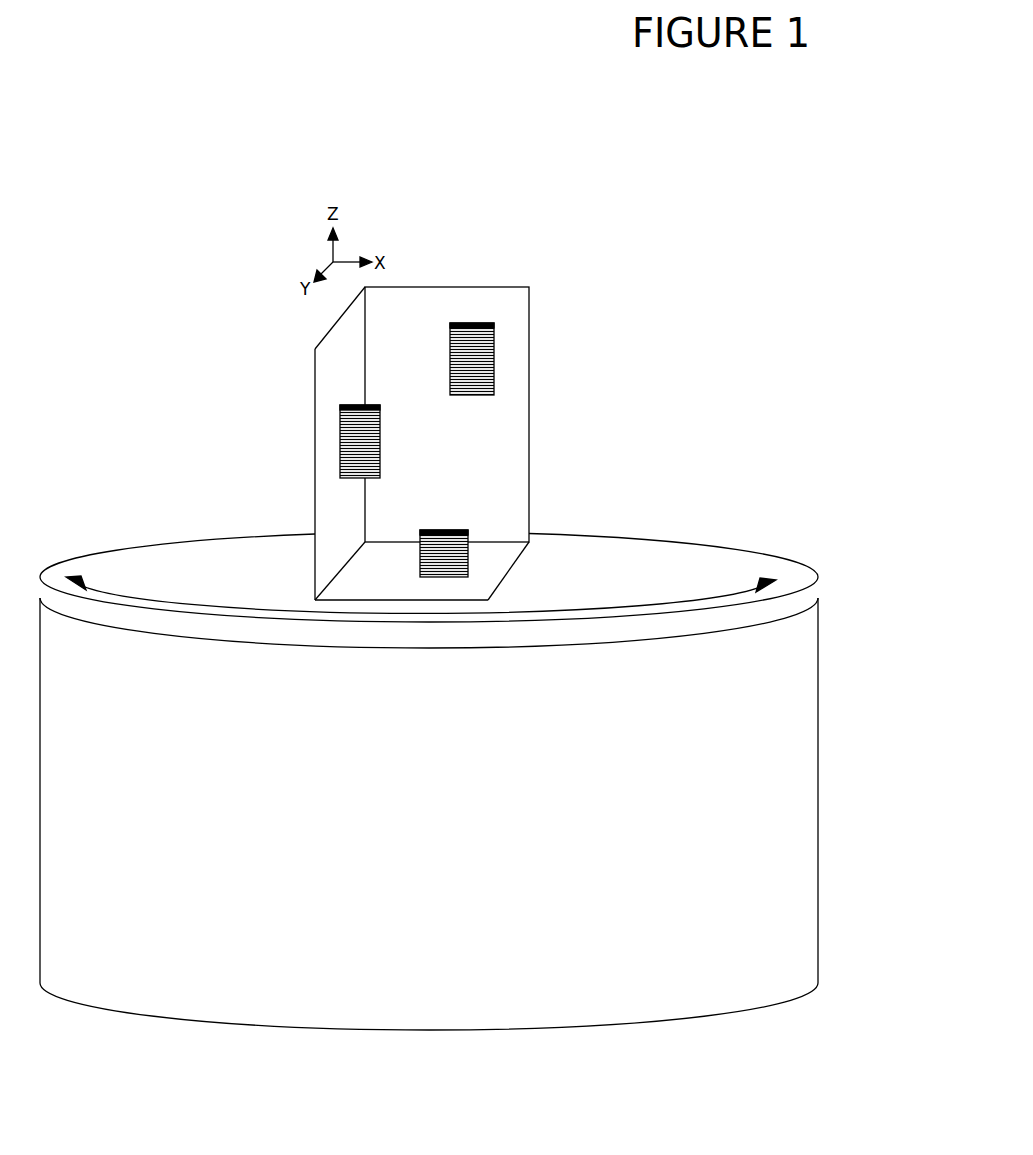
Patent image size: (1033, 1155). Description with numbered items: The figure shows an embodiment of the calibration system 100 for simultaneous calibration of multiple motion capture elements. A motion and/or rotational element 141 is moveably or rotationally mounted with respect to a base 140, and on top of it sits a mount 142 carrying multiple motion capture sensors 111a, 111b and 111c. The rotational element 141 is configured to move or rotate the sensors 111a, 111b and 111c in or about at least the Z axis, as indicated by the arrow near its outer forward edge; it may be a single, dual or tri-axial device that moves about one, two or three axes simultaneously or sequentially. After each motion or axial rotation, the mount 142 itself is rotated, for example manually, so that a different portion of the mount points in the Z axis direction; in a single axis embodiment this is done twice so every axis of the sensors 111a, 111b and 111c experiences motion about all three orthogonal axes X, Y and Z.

The calibration system 100 is at (356, 344).
The motion capture sensor 111a is at (494, 361).
The motion capture sensor 111b is at (380, 440).
The motion capture sensor 111c is at (468, 556).
The base 140 is at (225, 1020).
The motion and/or rotational element 141 is at (215, 567).
The mount 142 is at (315, 420).